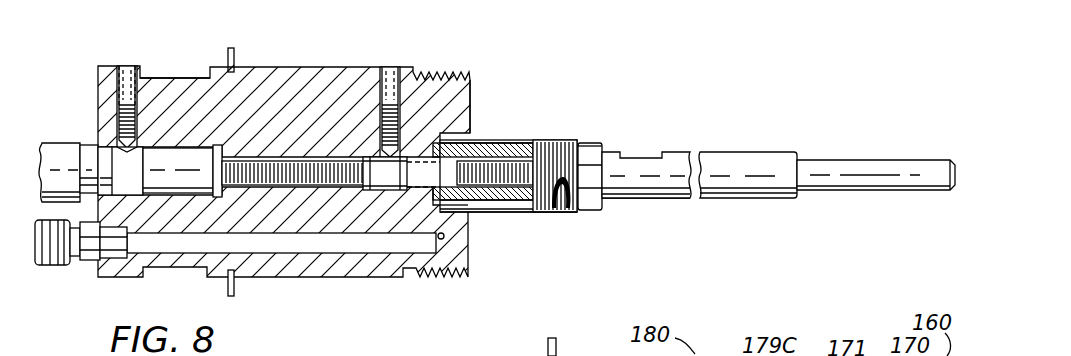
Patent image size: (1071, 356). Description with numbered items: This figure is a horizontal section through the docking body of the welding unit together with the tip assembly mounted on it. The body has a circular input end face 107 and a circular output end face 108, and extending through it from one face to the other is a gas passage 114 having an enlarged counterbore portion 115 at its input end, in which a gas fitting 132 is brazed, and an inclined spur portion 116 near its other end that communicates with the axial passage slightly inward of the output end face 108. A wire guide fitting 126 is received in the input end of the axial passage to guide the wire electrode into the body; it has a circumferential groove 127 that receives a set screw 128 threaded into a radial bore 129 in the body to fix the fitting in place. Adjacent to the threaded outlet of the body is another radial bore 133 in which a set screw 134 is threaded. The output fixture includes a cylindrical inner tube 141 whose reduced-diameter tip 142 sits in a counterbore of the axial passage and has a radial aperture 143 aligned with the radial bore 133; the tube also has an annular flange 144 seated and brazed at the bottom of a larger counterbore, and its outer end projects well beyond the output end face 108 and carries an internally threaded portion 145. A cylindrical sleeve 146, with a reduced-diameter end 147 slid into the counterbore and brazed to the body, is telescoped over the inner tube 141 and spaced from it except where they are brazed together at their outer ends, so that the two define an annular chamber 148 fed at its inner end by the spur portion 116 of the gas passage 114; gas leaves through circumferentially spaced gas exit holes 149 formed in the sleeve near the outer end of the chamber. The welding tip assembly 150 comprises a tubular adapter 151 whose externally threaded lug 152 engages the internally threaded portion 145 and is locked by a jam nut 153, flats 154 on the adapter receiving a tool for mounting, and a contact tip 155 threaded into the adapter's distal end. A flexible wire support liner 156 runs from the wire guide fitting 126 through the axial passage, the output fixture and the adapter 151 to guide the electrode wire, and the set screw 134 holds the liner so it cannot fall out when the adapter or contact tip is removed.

The input end face 107 is at (98, 97).
The output end face 108 is at (470, 80).
The gas passage 114 is at (338, 248).
The counterbore portion 115 is at (111, 256).
The inclined spur portion 116 is at (447, 233).
The wire guide fitting 126 is at (84, 138).
The circumferential groove 127 is at (127, 173).
The set screw 128 is at (143, 125).
The radial bore 129 is at (125, 68).
The gas fitting 132 is at (53, 267).
The radial bore 133 is at (382, 66).
The set screw 134 is at (377, 125).
The inner tube 141 is at (498, 115).
The reduced-diameter tip 142 is at (415, 143).
The radial aperture 143 is at (385, 168).
The annular flange 144 is at (457, 215).
The internally threaded portion 145 is at (581, 212).
The cylindrical sleeve 146 is at (518, 140).
The reduced-diameter end 147 is at (470, 215).
The annular chamber 148 is at (543, 140).
The gas exit holes 149 is at (545, 218).
The welding tip assembly 150 is at (773, 125).
The tubular adapter 151 is at (737, 200).
The externally threaded lug 152 is at (582, 140).
The jam nut 153 is at (594, 140).
The flats 154 is at (652, 200).
The contact tip 155 is at (900, 127).
The wire support liner 156 is at (271, 158).